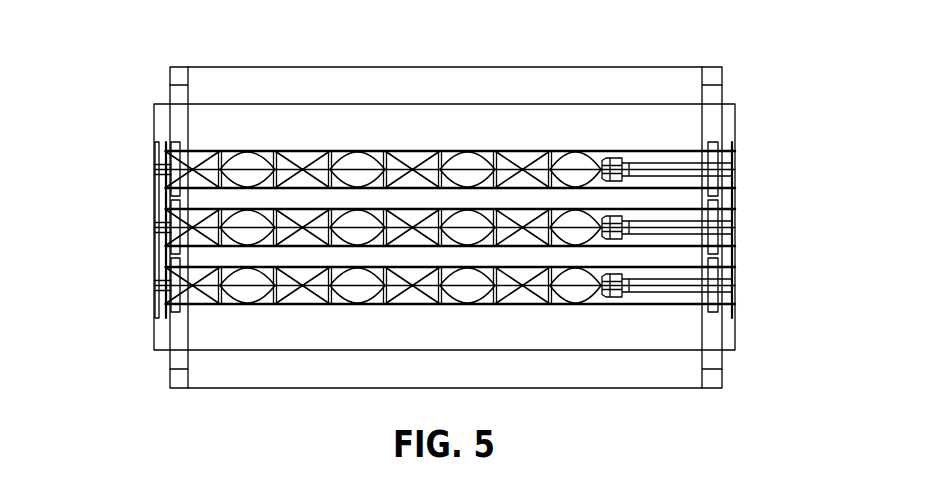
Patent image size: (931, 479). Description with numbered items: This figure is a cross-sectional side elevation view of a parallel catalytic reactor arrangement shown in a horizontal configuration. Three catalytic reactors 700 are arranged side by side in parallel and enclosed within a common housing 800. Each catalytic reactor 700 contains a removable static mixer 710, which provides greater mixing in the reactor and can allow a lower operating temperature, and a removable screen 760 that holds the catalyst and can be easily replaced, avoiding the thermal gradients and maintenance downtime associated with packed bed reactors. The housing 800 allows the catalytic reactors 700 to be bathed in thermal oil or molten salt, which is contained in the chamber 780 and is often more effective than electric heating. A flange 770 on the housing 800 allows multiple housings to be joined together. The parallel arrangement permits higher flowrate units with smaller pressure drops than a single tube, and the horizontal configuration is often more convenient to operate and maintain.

The housing 800 is at (435, 242).
The catalytic reactor 700 is at (747, 148).
The removable static mixer 710 is at (405, 263).
The removable screen 760 is at (635, 230).
The flange 770 is at (708, 378).
The chamber 780 is at (253, 343).